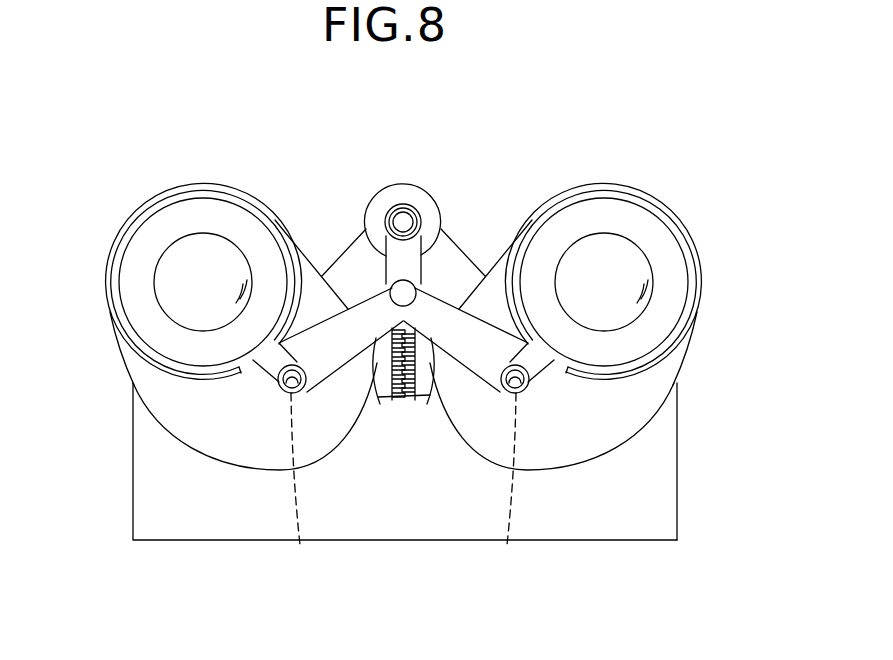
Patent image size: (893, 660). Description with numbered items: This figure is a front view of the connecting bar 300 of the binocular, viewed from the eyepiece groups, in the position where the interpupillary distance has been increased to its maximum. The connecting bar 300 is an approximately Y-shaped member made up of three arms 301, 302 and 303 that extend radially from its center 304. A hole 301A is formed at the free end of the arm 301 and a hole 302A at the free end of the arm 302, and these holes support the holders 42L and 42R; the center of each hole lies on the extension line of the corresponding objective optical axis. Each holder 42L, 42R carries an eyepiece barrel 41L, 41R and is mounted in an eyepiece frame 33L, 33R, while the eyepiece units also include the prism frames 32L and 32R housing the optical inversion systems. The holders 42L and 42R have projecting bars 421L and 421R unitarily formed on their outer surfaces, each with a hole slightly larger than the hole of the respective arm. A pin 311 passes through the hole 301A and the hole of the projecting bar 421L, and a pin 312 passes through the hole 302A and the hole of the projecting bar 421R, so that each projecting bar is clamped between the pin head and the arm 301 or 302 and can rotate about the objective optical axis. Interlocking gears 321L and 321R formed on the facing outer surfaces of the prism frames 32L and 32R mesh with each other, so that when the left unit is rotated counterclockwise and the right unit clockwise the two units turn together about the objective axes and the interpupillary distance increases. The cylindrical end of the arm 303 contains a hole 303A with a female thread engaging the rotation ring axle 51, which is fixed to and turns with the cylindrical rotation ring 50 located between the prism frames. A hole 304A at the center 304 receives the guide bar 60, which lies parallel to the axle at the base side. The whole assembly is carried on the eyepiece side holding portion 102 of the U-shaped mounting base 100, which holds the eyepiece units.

The mounting base 100 is at (680, 542).
The eyepiece side holding portion 102 is at (150, 528).
The prism frame 32L is at (187, 442).
The prism frame 32R is at (620, 442).
The eyepiece frame 33L is at (104, 302).
The eyepiece frame 33R is at (704, 300).
The eyepiece barrel 41L is at (133, 252).
The eyepiece barrel 41R is at (690, 233).
The holder 42L is at (150, 372).
The holder 42R is at (657, 372).
The projecting bar 421L is at (250, 370).
The projecting bar 421R is at (557, 370).
The connecting bar 300 is at (328, 263).
The arm 301 is at (336, 313).
The arm 302 is at (471, 313).
The hole 301A is at (317, 488).
The hole 302A is at (497, 488).
The pin 311 is at (268, 394).
The pin 312 is at (537, 394).
The interlocking gear 321L is at (378, 400).
The interlocking gear 321R is at (428, 400).
The arm 303 is at (410, 252).
The hole 303A is at (404, 222).
The center 304 is at (453, 280).
The hole 304A is at (447, 275).
The rotation ring 50 is at (370, 207).
The rotation ring axle 51 is at (401, 217).
The guide bar 60 is at (349, 272).